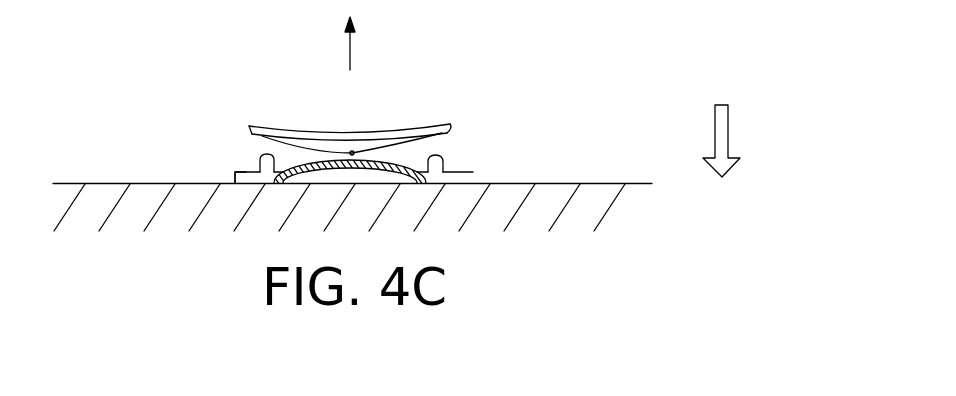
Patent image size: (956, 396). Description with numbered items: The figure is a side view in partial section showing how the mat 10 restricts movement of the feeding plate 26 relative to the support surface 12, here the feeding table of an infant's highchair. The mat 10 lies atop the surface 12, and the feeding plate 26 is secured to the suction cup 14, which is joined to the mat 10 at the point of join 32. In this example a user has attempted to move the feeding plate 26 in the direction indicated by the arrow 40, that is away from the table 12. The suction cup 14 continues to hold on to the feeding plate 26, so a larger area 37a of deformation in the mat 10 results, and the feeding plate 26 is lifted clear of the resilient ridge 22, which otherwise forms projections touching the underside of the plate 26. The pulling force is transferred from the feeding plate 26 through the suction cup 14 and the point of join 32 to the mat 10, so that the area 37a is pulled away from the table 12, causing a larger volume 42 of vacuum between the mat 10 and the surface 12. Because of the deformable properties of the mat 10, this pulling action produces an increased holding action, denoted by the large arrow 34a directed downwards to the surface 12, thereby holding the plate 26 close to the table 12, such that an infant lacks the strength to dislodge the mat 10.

The mat 10 is at (473, 172).
The support surface 12 is at (513, 262).
The suction cup 14 is at (283, 137).
The resilient ridge 22 is at (246, 172).
The feeding plate 26 is at (437, 124).
The point of join 32 is at (352, 150).
The large arrow 34a is at (741, 141).
The area of deformation 37a is at (267, 154).
The arrow 40 is at (365, 43).
The volume of vacuum 42 is at (367, 161).